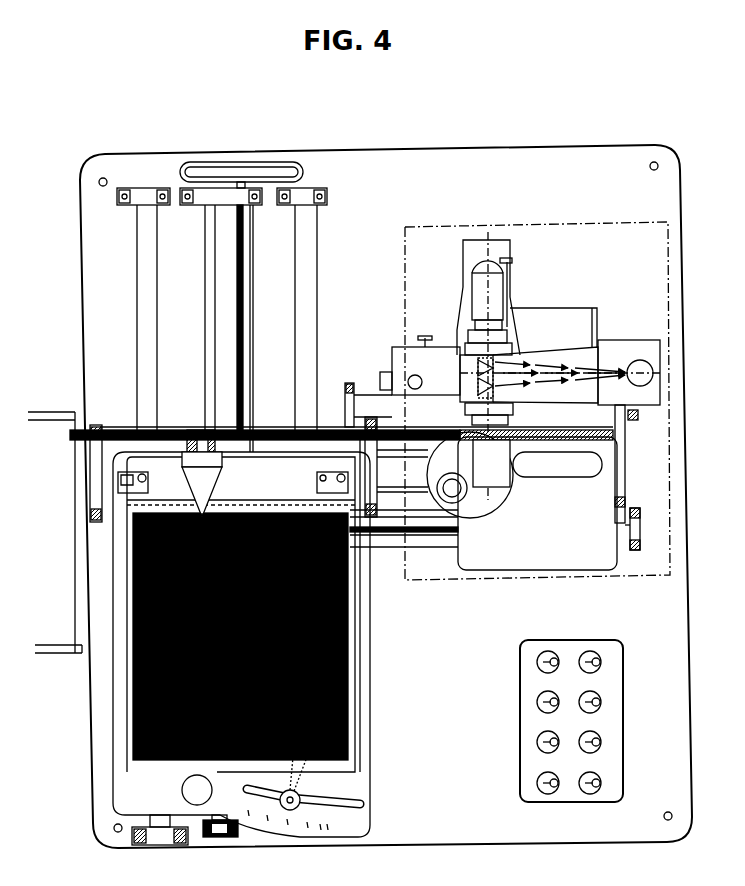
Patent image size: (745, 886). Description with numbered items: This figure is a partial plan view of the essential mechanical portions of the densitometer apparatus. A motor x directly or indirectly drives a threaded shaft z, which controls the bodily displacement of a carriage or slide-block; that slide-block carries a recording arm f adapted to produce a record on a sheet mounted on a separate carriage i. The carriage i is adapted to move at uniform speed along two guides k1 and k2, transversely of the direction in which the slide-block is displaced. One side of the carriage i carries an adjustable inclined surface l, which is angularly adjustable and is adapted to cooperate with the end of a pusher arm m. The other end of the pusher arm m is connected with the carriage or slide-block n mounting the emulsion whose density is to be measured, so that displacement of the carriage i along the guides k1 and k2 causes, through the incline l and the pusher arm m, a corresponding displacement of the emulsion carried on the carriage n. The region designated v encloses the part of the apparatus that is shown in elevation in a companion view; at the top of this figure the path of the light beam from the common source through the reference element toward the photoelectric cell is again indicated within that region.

The guide k1 is at (143, 285).
The guide k2 is at (307, 265).
The threaded shaft z is at (133, 435).
The motor x is at (49, 504).
The recording arm f is at (130, 547).
The pusher arm m is at (390, 523).
The carriage or slide-block n is at (570, 543).
The part designated V v is at (517, 225).
The carriage i is at (636, 362).
The adjustable inclined surface l is at (300, 783).